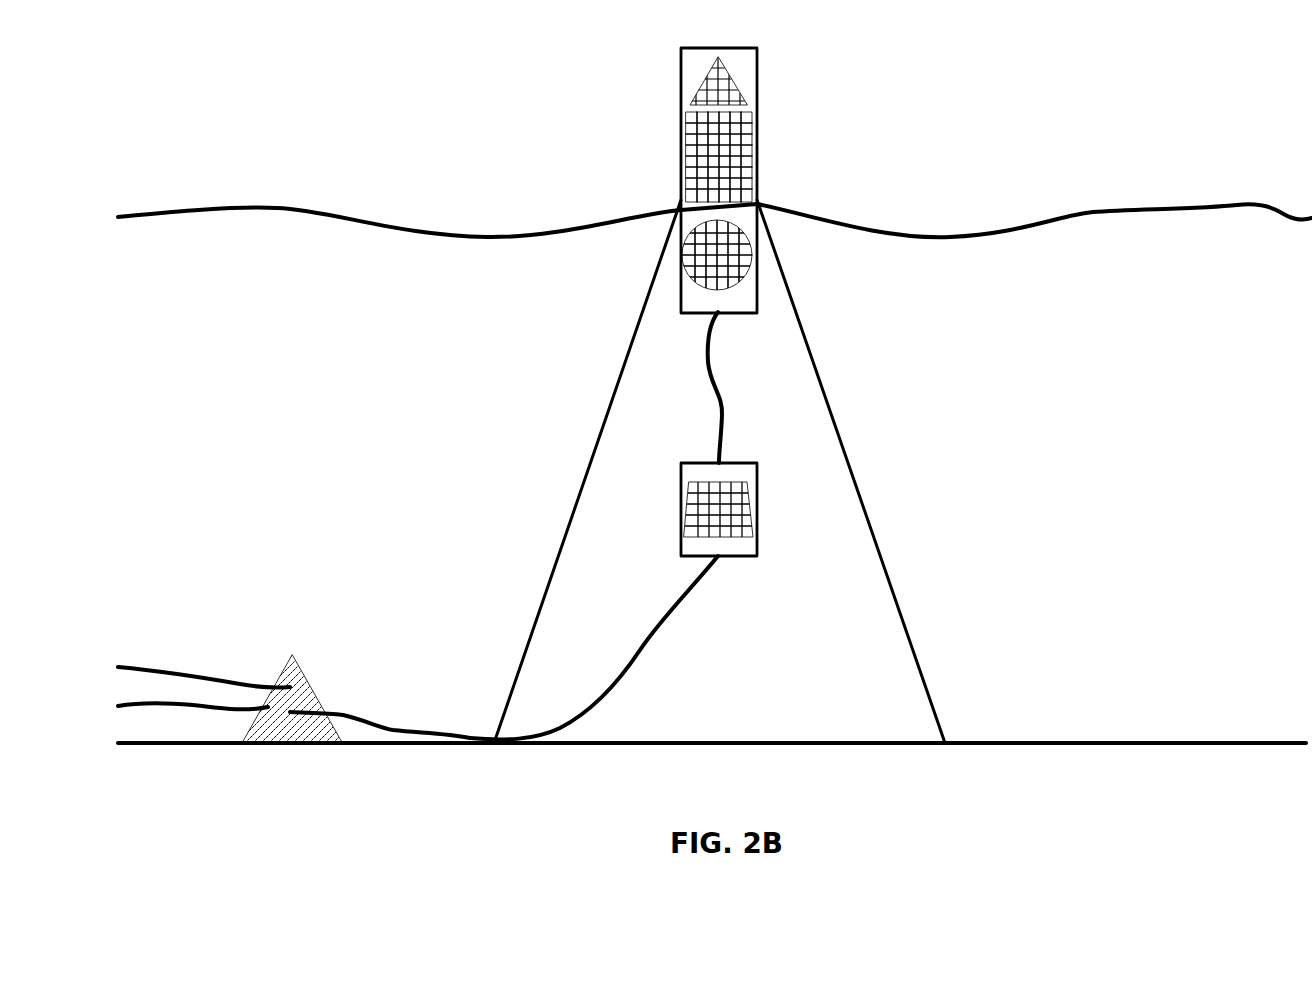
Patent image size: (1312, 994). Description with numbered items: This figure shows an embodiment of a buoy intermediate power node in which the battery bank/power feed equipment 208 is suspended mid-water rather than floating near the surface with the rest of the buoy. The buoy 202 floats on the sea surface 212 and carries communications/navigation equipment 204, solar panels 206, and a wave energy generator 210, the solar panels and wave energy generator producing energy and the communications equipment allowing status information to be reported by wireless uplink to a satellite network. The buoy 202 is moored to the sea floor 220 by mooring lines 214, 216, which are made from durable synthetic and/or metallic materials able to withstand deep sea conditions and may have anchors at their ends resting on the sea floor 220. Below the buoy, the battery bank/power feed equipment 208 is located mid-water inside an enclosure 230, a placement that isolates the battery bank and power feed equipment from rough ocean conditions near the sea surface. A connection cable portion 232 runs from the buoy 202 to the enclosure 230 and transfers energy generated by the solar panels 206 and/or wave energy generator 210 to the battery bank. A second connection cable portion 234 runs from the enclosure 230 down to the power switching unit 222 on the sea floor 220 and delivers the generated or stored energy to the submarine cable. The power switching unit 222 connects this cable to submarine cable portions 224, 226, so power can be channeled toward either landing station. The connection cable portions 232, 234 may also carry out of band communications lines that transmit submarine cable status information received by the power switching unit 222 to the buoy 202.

The buoy 202 is at (757, 62).
The communications/navigation equipment 204 is at (718, 88).
The solar panels 206 is at (725, 157).
The battery bank/power feed equipment 208 is at (723, 505).
The wave energy generator 210 is at (717, 257).
The sea surface 212 is at (1193, 209).
The mooring line 214 is at (577, 498).
The mooring line 216 is at (861, 497).
The sea floor 220 is at (1133, 742).
The power switching unit 222 is at (293, 657).
The submarine cable portion 224 is at (180, 703).
The submarine cable portion 226 is at (153, 668).
The enclosure 230 is at (758, 480).
The connection cable portion 232 is at (722, 407).
The connection cable portion 234 is at (653, 630).